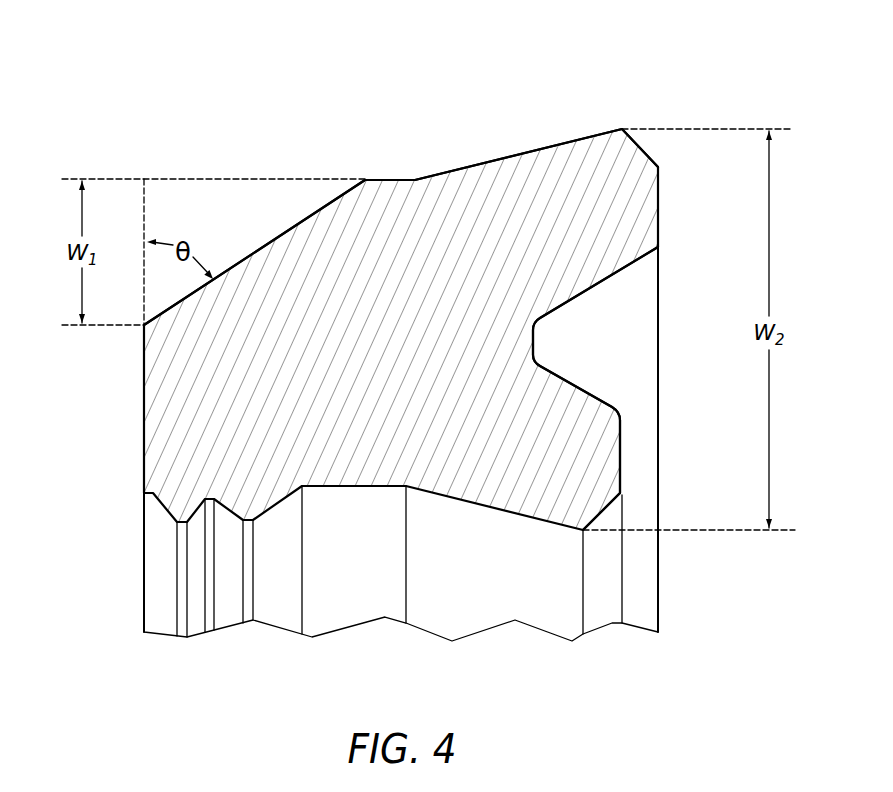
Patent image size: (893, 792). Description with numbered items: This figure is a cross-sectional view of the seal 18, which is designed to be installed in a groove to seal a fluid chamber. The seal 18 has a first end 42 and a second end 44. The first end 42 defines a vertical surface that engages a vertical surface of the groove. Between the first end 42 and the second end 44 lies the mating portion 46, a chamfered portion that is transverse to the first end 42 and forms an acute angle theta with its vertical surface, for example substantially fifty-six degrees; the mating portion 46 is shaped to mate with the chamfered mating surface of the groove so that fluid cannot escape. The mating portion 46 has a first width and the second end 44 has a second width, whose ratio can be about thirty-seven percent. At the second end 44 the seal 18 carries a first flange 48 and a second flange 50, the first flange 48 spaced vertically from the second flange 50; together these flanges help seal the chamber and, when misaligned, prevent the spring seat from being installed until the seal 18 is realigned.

The seal 18 is at (488, 127).
The first end 42 is at (142, 397).
The second end 44 is at (660, 218).
The mating portion 46 is at (290, 229).
The first flange 48 is at (615, 172).
The second flange 50 is at (587, 473).